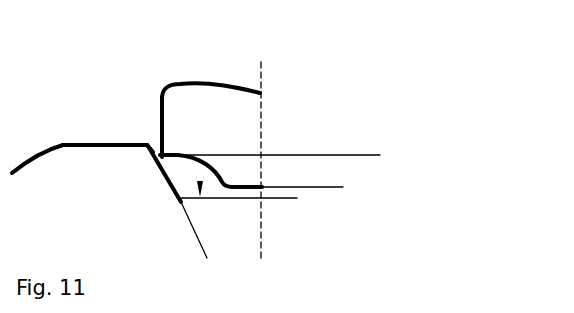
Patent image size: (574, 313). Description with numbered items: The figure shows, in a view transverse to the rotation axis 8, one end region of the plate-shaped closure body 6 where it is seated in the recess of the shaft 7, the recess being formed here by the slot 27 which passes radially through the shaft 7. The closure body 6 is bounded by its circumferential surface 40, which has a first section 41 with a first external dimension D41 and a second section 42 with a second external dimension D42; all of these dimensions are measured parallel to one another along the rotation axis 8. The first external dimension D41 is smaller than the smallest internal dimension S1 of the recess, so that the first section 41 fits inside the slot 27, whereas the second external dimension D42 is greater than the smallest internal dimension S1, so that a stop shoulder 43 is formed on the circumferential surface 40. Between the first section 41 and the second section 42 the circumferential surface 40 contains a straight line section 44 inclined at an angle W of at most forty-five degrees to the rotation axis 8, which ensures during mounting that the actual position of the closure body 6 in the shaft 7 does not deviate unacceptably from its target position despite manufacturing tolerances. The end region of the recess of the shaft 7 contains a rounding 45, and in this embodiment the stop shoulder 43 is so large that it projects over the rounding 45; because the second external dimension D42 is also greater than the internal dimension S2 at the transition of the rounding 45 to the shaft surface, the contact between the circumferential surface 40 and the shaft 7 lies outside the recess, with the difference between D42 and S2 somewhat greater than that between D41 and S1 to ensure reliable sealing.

The closure body 6 is at (27, 168).
The circumferential surface 40 is at (62, 144).
The second section 42 is at (111, 136).
The stop shoulder 43 is at (152, 133).
The shaft 7 is at (193, 94).
The rotation axis 8 is at (264, 71).
The rounding 45 is at (185, 153).
The first section 41 is at (186, 208).
The straight line section 44 is at (166, 170).
The slot 27 is at (300, 194).
The second external dimension D42 is at (120, 154).
The first external dimension D41 is at (290, 207).
The smallest internal dimension S1 is at (343, 196).
The internal dimension S2 is at (380, 164).
The angle W is at (252, 245).